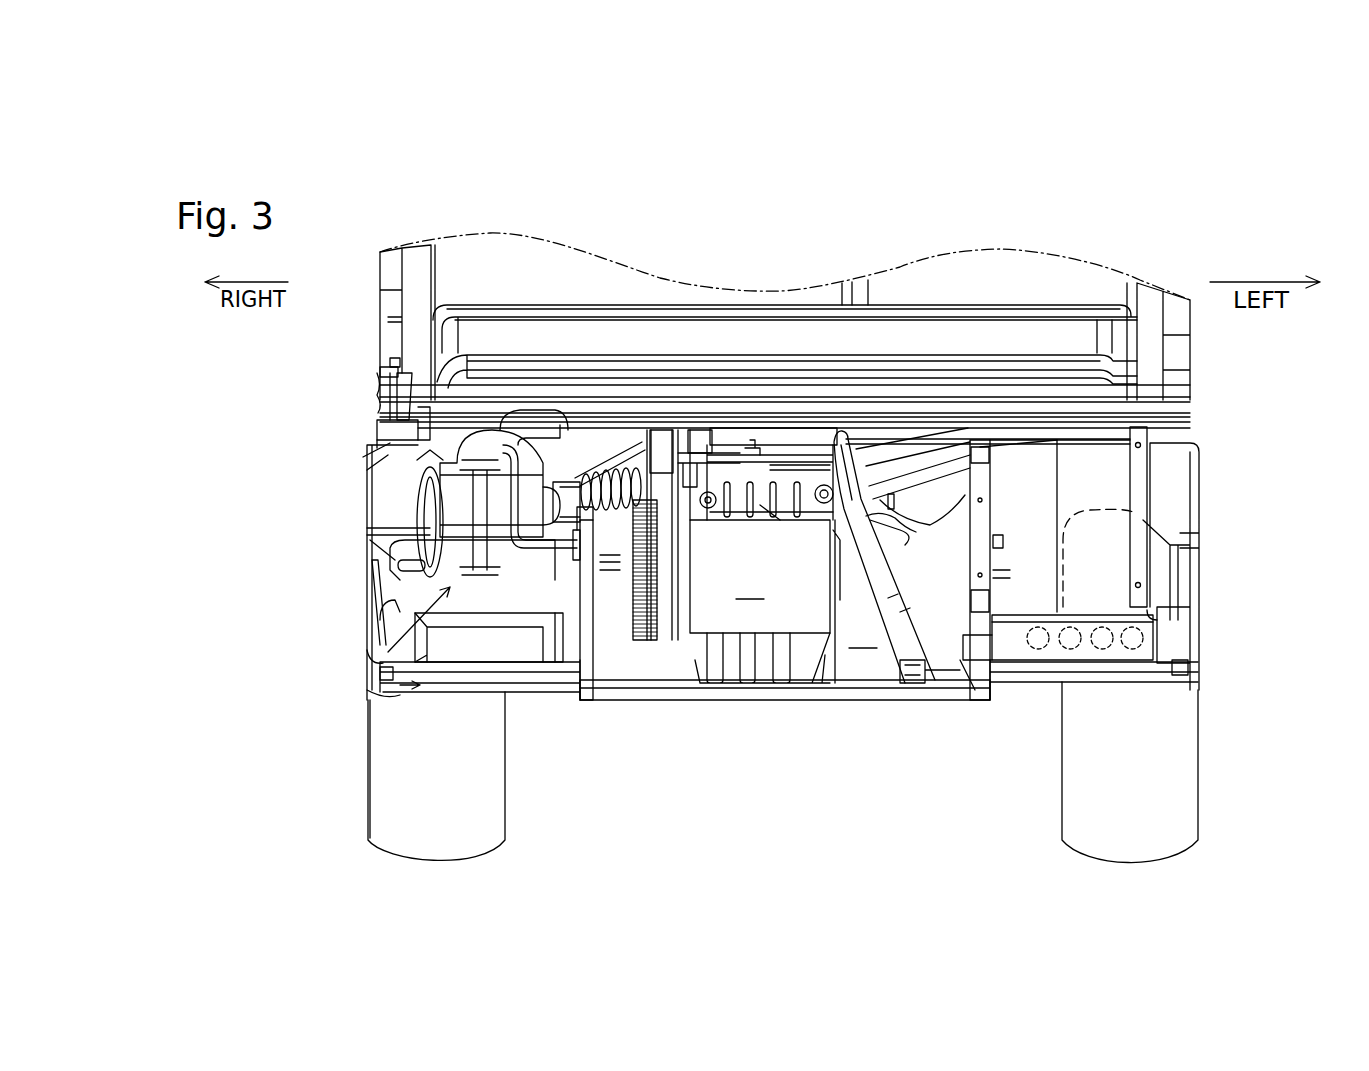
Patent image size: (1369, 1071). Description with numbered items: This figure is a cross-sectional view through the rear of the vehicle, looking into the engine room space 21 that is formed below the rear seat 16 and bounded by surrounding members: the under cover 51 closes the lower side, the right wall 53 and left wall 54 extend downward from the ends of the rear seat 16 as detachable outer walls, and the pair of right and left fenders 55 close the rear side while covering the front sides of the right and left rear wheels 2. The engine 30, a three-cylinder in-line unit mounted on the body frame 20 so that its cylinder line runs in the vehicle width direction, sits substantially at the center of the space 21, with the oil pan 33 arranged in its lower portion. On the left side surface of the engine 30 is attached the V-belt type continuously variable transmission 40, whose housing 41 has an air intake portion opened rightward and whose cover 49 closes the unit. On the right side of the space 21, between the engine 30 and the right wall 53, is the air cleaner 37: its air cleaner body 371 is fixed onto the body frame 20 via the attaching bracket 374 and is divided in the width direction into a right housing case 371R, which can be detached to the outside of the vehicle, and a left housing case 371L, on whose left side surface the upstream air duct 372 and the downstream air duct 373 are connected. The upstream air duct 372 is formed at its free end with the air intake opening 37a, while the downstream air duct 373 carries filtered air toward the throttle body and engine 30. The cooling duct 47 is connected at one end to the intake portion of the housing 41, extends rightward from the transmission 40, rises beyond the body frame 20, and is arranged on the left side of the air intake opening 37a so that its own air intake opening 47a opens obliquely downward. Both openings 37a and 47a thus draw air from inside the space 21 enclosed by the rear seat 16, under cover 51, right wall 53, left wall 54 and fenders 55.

The rear wheels 2 is at (368, 840).
The rear seat 16 is at (940, 278).
The body frame 20 is at (990, 665).
The space 21 is at (1035, 459).
The engine 30 is at (763, 530).
The oil pan 33 is at (757, 690).
The air cleaner 37 is at (375, 521).
The air intake opening 37a is at (377, 423).
The V-belt type continuously variable transmission 40 is at (855, 601).
The housing 41 is at (850, 672).
The cooling duct 47 is at (540, 425).
The air intake opening 47a is at (392, 362).
The cover 49 is at (947, 675).
The under cover 51 is at (689, 697).
The right wall 53 is at (368, 565).
The left wall 54 is at (1188, 558).
The fenders 55 is at (388, 483).
The air cleaner body 371 is at (370, 675).
The left housing case 371L is at (505, 580).
The right housing case 371R is at (363, 628).
The upstream air duct 372 is at (507, 443).
The downstream air duct 373 is at (626, 520).
The attaching bracket 374 is at (570, 555).